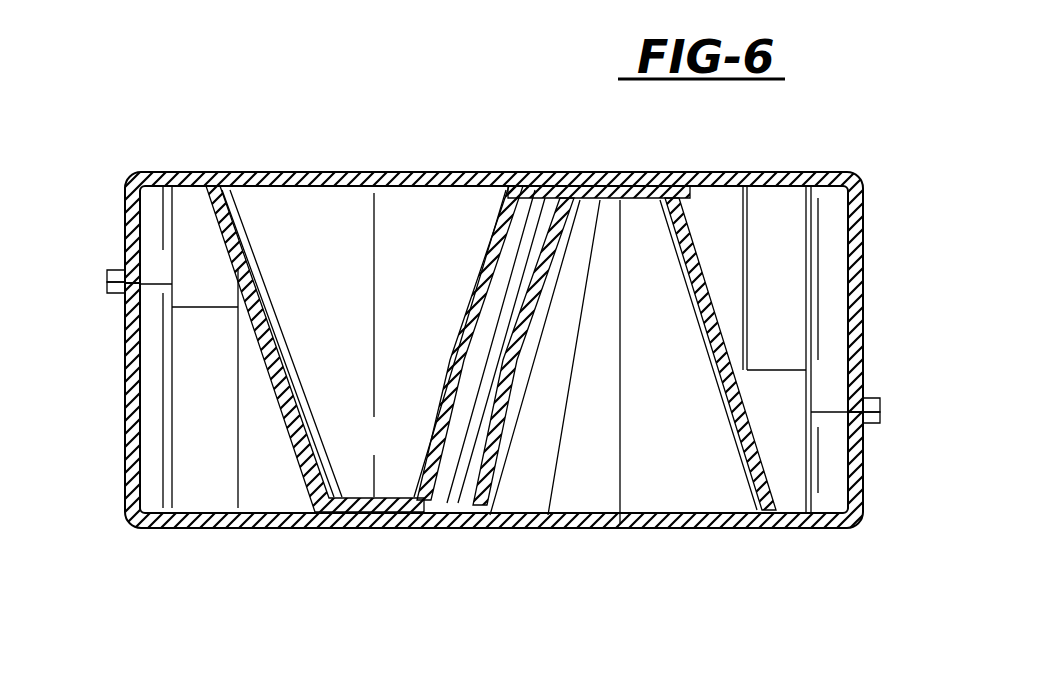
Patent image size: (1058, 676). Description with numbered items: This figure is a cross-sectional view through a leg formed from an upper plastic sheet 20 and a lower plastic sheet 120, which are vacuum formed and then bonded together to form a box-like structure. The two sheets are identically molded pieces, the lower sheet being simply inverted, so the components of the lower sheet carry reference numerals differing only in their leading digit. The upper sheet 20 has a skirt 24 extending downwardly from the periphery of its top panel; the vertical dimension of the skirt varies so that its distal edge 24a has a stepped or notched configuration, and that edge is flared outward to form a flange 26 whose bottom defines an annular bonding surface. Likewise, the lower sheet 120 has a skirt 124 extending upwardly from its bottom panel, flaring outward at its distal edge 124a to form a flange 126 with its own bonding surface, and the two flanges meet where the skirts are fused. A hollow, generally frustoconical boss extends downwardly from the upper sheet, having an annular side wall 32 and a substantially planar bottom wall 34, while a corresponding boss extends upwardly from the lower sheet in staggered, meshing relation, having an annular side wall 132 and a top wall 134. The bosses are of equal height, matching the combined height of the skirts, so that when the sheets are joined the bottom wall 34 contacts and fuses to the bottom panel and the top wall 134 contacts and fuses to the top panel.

The upper plastic sheet 20 is at (491, 251).
The skirt 24 is at (862, 218).
The distal edge 24a is at (864, 392).
The flange 26 is at (118, 270).
The annular side wall 32 is at (492, 237).
The bottom wall 34 is at (403, 487).
The lower plastic sheet 120 is at (488, 457).
The skirt 124 is at (862, 505).
The distal edge 124a is at (861, 427).
The flange 126 is at (117, 293).
The annular side wall 132 is at (750, 478).
The top wall 134 is at (642, 200).